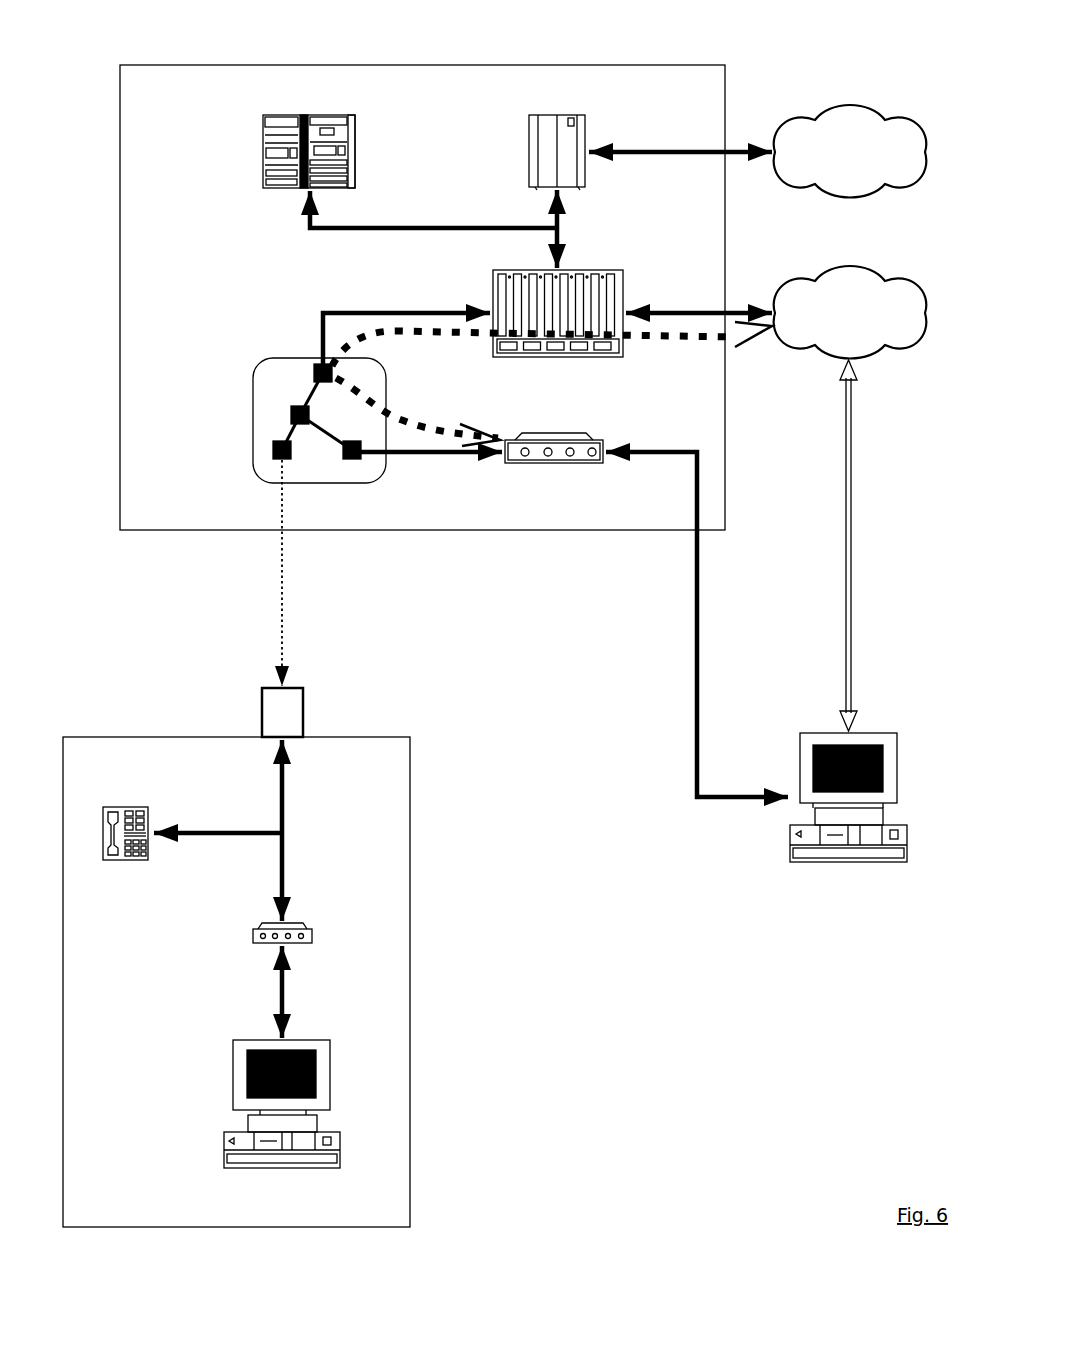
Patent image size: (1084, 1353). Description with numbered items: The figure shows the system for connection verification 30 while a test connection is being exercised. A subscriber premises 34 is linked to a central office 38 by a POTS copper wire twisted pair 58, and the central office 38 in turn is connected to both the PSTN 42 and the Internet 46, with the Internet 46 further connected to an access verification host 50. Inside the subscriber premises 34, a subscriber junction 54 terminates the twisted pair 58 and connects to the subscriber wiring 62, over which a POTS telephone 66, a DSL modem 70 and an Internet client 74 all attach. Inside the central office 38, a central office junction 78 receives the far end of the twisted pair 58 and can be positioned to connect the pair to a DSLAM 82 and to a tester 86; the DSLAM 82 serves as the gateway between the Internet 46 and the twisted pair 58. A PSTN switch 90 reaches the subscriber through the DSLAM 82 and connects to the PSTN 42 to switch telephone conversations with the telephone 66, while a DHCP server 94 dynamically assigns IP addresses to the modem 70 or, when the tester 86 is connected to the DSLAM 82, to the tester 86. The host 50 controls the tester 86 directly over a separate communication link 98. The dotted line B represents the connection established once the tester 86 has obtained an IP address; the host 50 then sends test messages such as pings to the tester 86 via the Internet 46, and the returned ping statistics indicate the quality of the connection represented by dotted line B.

The system for connection verification 30 is at (727, 1070).
The subscriber premises 34 is at (414, 1152).
The central office 38 is at (117, 494).
The PSTN 42 is at (850, 151).
The Internet 46 is at (850, 312).
The access verification host 50 is at (882, 862).
The subscriber junction 54 is at (282, 712).
The POTS copper wire twisted pair 58 is at (280, 586).
The subscriber wiring 62 is at (280, 780).
The POTS telephone 66 is at (131, 860).
The DSL modem 70 is at (250, 938).
The Internet client 74 is at (231, 1066).
The central office junction 78 is at (248, 437).
The DSLAM 82 is at (489, 352).
The tester 86 is at (499, 468).
The PSTN switch 90 is at (523, 162).
The DHCP server 94 is at (256, 160).
The communication link 98 is at (694, 800).
The dotted line B is at (667, 348).